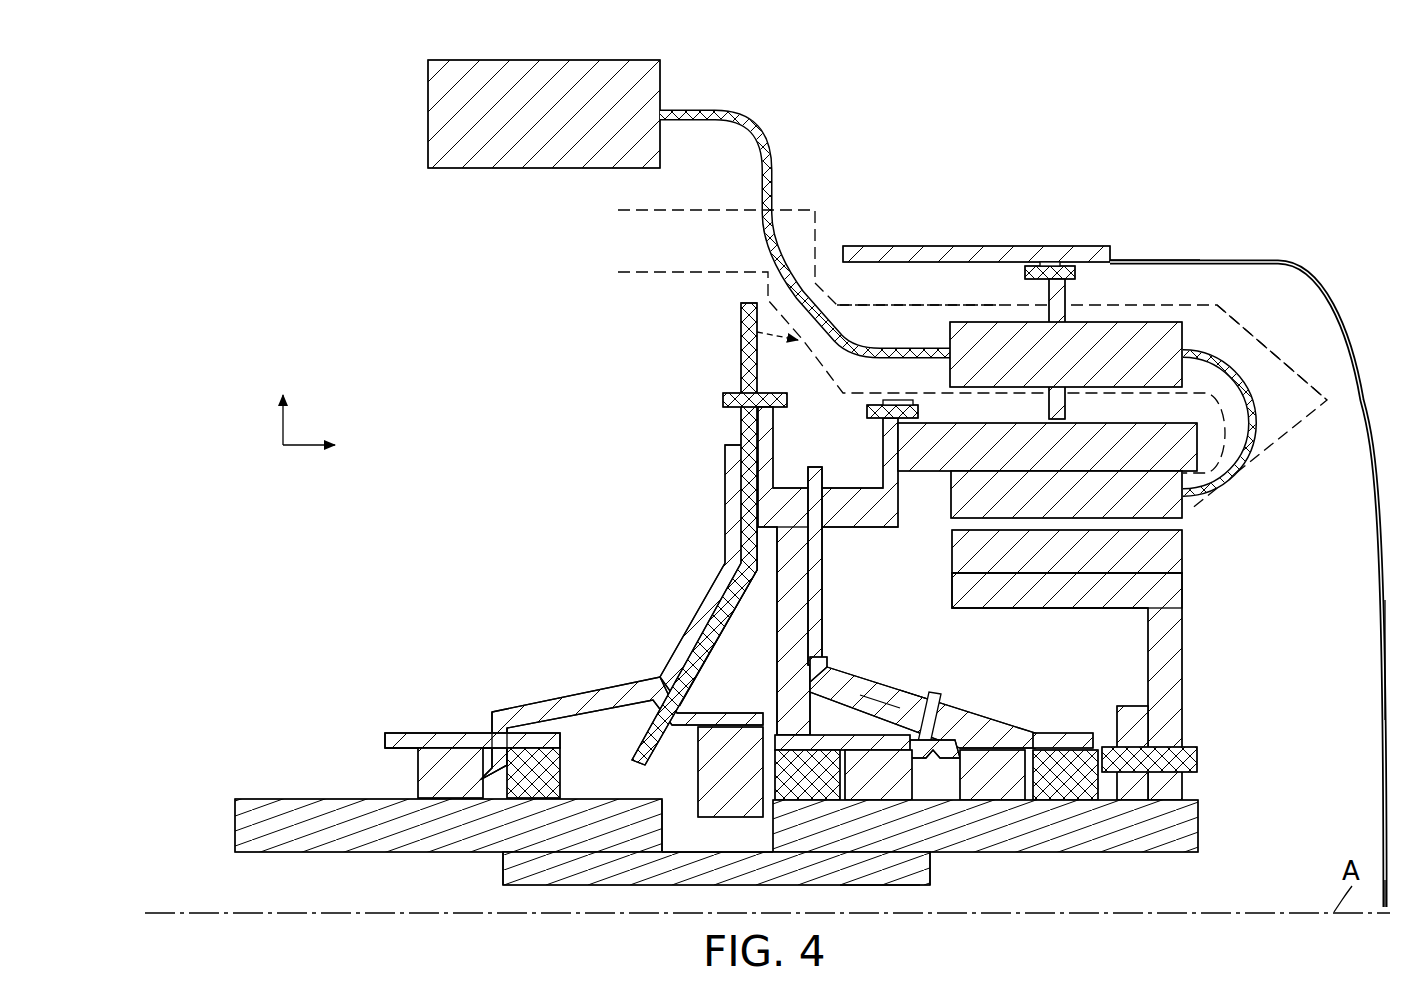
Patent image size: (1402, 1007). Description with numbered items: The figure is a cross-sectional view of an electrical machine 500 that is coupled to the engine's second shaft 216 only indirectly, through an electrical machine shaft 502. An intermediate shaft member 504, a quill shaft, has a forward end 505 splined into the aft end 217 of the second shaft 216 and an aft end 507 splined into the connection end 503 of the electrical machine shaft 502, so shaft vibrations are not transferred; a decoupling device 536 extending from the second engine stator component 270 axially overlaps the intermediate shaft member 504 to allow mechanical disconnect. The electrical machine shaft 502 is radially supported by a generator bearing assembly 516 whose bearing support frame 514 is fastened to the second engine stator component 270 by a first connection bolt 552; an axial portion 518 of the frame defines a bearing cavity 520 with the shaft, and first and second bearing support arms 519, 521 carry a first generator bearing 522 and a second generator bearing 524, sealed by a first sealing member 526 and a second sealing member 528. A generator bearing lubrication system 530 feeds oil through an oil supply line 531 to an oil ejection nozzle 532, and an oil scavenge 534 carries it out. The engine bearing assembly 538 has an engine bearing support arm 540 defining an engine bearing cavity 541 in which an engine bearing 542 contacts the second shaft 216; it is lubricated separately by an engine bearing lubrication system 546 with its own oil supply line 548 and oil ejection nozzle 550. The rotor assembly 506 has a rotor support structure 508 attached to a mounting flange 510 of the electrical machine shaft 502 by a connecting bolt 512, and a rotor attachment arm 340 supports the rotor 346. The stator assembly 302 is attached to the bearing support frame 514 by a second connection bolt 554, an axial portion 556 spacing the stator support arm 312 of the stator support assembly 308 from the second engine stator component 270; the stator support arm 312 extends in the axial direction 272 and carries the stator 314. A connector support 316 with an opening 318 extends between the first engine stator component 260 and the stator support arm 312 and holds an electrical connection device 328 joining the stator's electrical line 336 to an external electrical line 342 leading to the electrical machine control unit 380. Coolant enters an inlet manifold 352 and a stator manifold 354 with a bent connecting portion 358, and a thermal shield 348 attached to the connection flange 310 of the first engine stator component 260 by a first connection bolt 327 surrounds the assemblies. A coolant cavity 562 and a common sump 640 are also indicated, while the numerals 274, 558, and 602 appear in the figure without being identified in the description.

The electrical machine control unit 380 is at (428, 104).
The external electrical line 342 is at (716, 114).
The inlet manifold 352 is at (714, 210).
The stator manifold 354 is at (768, 288).
The stator assembly 302 is at (757, 332).
The second engine stator component 270 is at (743, 349).
The first connection bolt 552 is at (723, 400).
The oil supply line 548 is at (688, 605).
The engine bearing lubrication system 546 is at (565, 675).
The axial portion 556 is at (862, 495).
The bearing support frame 514 is at (776, 656).
The oil supply line 531 is at (815, 597).
The generator bearing lubrication system 530 is at (838, 612).
The oil scavenge 534 is at (840, 650).
The bearing cavity 520 is at (868, 713).
The first bearing support arm 519 is at (1026, 736).
The axial portion 518 is at (885, 706).
The motion direction 602 is at (915, 675).
The generator bearing assembly 516 is at (945, 735).
The oil ejection nozzle 532 is at (925, 762).
The second bearing support arm 521 is at (763, 742).
The second sealing member 528 is at (810, 792).
The second generator bearing 524 is at (878, 792).
The first generator bearing 522 is at (1008, 792).
The first sealing member 526 is at (1078, 792).
The rotor 346 is at (1182, 555).
The rotor support structure 508 is at (1148, 652).
The coolant cavity 562 is at (942, 611).
The rotor attachment arm 340 is at (1073, 610).
The mounting flange 510 is at (1117, 722).
The connecting bolt 512 is at (1198, 760).
The electrical machine shaft 502 is at (1198, 825).
The second shaft 216 is at (235, 828).
The aft end 217 is at (668, 826).
The connection end 503 is at (774, 854).
The forward end 505 is at (504, 868).
The aft end 507 is at (930, 872).
The intermediate shaft member 504 is at (880, 885).
The common sump 640 is at (743, 843).
The decoupling device 536 is at (755, 798).
The engine bearing support arm 540 is at (453, 733).
The engine bearing cavity 541 is at (387, 789).
The engine bearing assembly 538 is at (404, 732).
The engine bearing 542 is at (456, 798).
The second connection bolt 554 is at (545, 791).
The oil ejection nozzle 550 is at (498, 788).
The first engine stator component 260 is at (976, 246).
The first connection bolt 327 is at (1025, 272).
The connection flange 310 is at (1048, 264).
The connector support 316 is at (1066, 408).
The electrical connection device 328 is at (950, 340).
The stator support arm 312 is at (1069, 459).
The stator 314 is at (1089, 509).
The electrical line 336 is at (1252, 427).
The region 558 is at (1326, 360).
The thermal shield 348 is at (1304, 261).
The stator support assembly 308 is at (1130, 288).
The rotor assembly 506 is at (1220, 654).
The electrical machine 500 is at (1230, 126).
The vertical axis 274 is at (271, 441).
The axial direction 272 is at (292, 448).
The opening 318 is at (973, 315).
The connecting portion 358 is at (1180, 305).